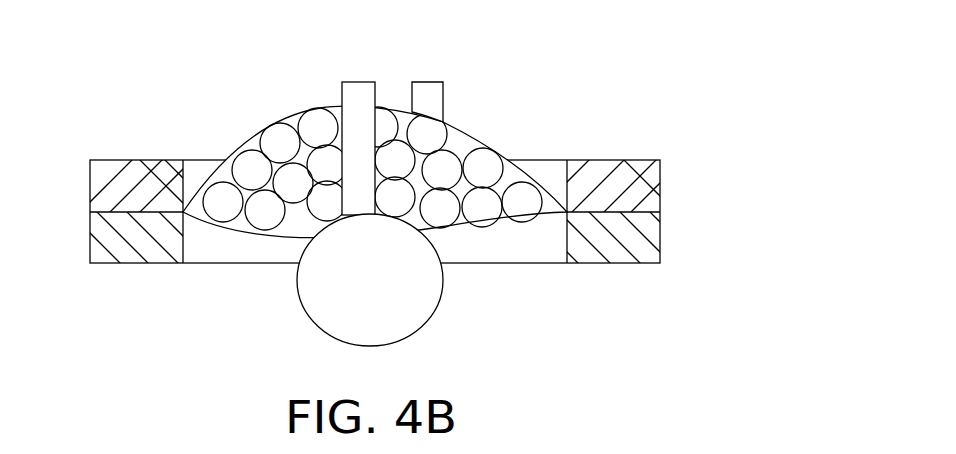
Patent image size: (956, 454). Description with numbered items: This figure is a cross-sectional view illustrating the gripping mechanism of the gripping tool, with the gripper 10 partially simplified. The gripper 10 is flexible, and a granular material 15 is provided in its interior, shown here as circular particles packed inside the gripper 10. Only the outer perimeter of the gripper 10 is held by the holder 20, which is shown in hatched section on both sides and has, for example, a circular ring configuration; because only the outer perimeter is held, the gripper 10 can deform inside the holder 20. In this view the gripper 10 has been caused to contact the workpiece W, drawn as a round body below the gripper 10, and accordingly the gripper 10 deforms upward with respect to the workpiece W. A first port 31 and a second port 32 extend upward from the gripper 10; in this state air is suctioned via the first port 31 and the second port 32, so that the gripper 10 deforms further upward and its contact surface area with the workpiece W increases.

The holder 20 is at (133, 172).
The gripper 10 is at (481, 142).
The granular material 15 is at (487, 215).
The second port 32 is at (342, 90).
The first port 31 is at (446, 100).
The workpiece W is at (413, 322).